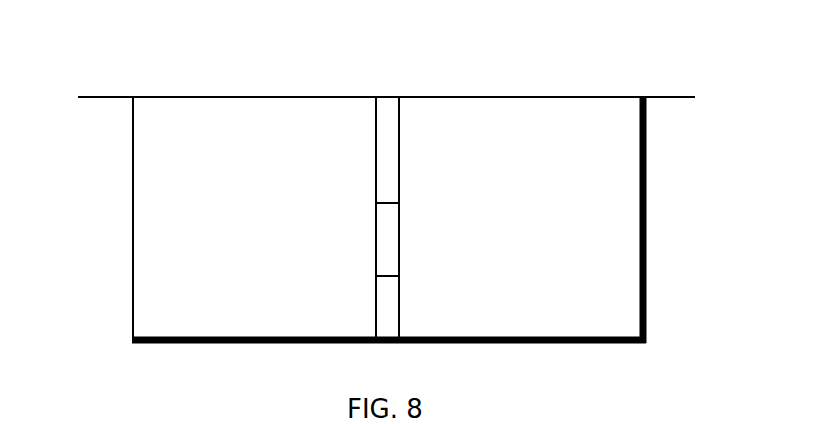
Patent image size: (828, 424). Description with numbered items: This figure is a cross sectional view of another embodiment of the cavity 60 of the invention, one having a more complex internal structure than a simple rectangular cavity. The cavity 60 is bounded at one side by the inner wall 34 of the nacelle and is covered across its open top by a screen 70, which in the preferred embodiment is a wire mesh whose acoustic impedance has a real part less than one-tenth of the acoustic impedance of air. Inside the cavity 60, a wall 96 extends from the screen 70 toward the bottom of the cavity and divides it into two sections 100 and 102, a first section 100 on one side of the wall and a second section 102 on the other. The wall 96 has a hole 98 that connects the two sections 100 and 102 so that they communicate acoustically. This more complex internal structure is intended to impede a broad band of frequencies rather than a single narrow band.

The cavity 60 is at (298, 60).
The screen 70 is at (463, 97).
The inner wall 34 is at (648, 97).
The first section 100 is at (138, 229).
The second section 102 is at (630, 228).
The wall 96 is at (390, 144).
The hole 98 is at (389, 226).